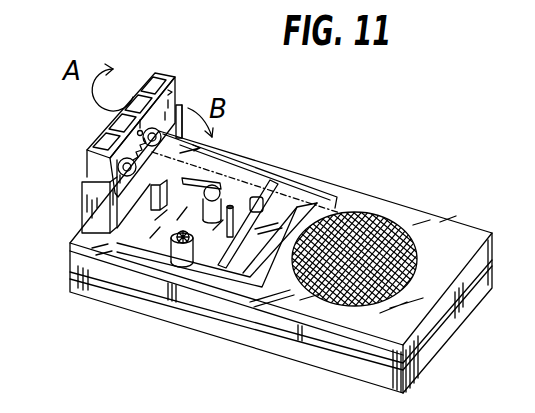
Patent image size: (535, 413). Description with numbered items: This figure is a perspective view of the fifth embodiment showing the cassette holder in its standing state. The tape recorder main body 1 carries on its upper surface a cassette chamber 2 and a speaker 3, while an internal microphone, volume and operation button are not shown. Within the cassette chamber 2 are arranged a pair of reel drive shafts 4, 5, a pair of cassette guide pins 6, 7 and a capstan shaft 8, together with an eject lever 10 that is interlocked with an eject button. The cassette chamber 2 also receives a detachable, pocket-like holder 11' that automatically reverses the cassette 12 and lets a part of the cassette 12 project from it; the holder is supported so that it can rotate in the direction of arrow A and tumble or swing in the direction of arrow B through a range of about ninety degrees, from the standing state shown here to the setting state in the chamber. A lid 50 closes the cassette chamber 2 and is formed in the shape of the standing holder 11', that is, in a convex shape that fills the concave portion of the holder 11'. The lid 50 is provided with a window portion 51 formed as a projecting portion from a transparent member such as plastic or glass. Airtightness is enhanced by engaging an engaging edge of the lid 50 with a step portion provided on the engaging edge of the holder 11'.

The tape recorder main body 1 is at (227, 342).
The cassette chamber 2 is at (147, 243).
The speaker 3 is at (412, 230).
The reel drive shaft 4 is at (238, 203).
The reel drive shaft 5 is at (107, 306).
The cassette guide pin 6 is at (285, 188).
The cassette guide pin 7 is at (200, 268).
The capstan shaft 8 is at (258, 200).
The eject lever 10 is at (212, 188).
The holder 11' is at (91, 204).
The cassette 12 is at (93, 170).
The lid 50 is at (257, 275).
The window portion 51 is at (325, 212).